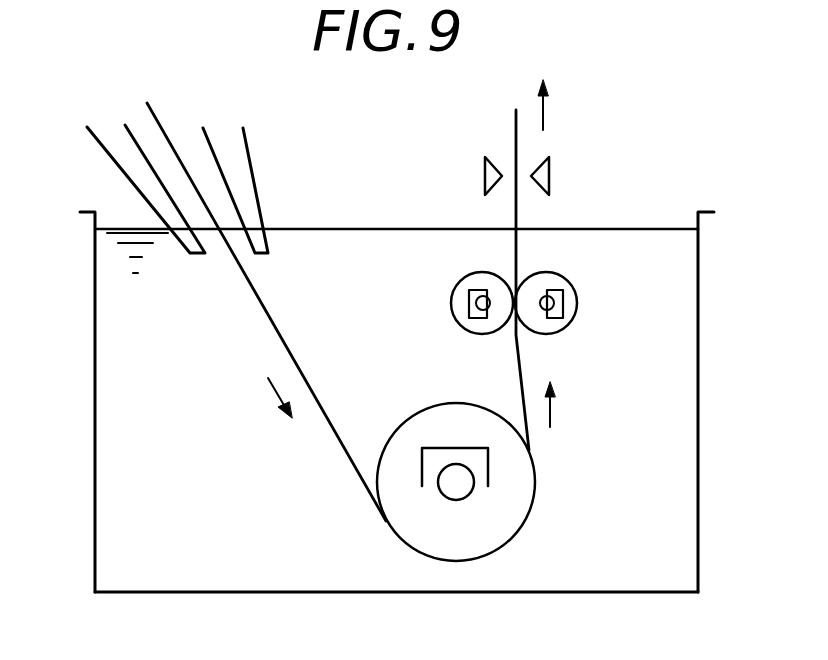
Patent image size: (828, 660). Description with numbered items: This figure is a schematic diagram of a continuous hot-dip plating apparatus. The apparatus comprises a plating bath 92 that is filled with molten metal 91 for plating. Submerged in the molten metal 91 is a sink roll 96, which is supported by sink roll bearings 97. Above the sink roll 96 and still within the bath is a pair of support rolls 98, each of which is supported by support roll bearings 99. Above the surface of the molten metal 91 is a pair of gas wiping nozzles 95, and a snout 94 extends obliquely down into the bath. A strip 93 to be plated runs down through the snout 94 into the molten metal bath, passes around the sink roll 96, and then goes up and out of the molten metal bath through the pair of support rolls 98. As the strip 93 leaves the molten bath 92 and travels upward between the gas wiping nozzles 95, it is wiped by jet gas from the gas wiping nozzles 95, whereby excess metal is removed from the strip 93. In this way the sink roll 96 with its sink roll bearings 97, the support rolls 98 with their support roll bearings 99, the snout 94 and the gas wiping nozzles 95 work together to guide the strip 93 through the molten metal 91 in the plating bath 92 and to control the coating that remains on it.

The molten metal 91 is at (610, 568).
The plating bath 92 is at (230, 592).
The strip 93 is at (173, 143).
The snout 94 is at (120, 140).
The gas wiping nozzles 95 is at (483, 173).
The sink roll 96 is at (487, 537).
The sink roll bearings 97 is at (430, 477).
The support rolls 98 is at (473, 273).
The support roll bearings 99 is at (470, 307).